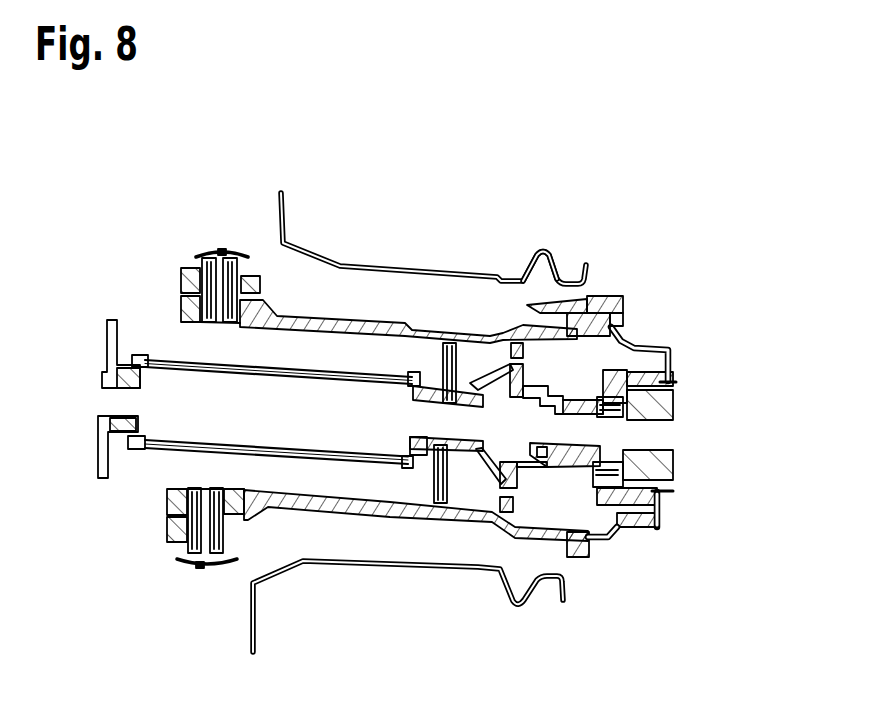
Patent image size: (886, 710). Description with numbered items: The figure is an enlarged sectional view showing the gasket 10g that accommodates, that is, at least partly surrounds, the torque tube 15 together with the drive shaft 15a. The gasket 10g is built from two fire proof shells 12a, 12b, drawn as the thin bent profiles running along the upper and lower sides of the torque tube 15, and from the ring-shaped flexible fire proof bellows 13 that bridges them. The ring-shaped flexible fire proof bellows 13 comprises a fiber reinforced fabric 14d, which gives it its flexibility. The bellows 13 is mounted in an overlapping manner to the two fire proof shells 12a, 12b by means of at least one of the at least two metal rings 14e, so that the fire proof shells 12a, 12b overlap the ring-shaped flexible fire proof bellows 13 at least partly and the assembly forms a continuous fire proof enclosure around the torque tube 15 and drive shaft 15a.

The gasket 10g is at (416, 238).
The torque tube 15 is at (310, 320).
The drive shaft 15a is at (257, 452).
The fire proof shell 12b is at (377, 267).
The fire proof shell 12a is at (379, 572).
The metal ring 14e is at (500, 295).
The fiber reinforced fabric 14d is at (546, 252).
The ring-shaped flexible fire proof bellows 13 is at (571, 260).